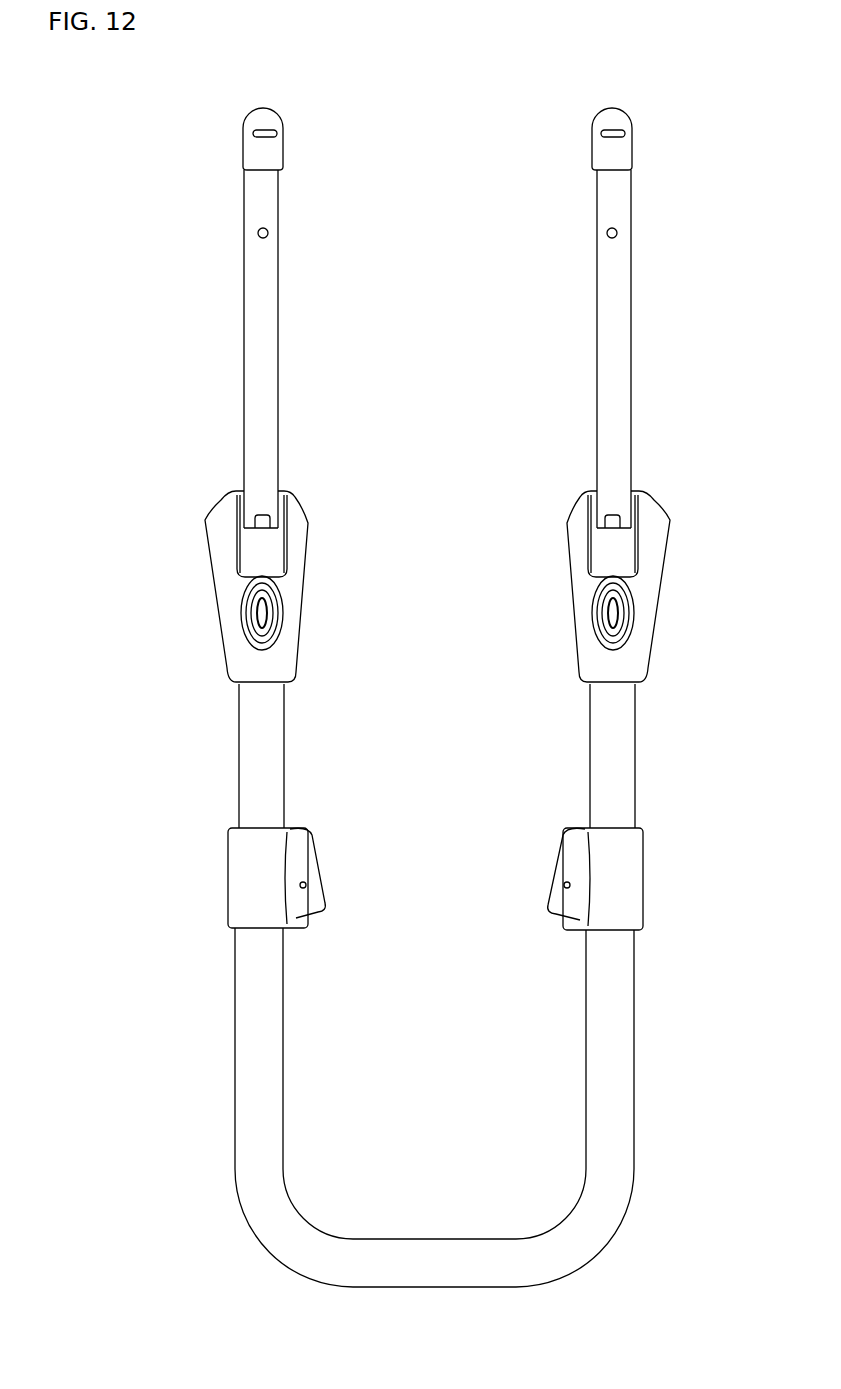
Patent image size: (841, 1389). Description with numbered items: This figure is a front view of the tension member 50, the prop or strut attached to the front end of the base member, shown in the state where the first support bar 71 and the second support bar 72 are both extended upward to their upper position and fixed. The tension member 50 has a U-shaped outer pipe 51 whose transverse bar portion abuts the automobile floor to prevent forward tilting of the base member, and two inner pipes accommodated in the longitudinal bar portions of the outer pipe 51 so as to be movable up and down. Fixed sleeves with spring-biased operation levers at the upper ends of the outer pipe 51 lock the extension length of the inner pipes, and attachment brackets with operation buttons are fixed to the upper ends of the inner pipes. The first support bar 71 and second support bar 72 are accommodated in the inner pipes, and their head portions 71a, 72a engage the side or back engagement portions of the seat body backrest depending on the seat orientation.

The tension member 50 is at (286, 1287).
The outer pipe 51 is at (618, 1087).
The first support bar 71 is at (260, 318).
The head portion 71a is at (268, 118).
The second support bar 72 is at (615, 318).
The head portion 72a is at (618, 118).